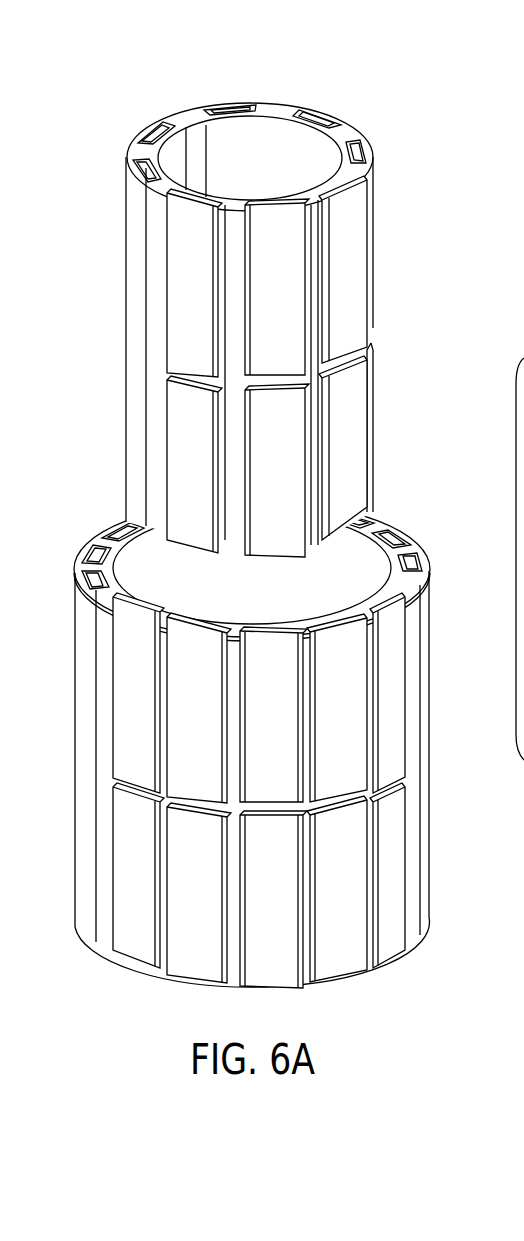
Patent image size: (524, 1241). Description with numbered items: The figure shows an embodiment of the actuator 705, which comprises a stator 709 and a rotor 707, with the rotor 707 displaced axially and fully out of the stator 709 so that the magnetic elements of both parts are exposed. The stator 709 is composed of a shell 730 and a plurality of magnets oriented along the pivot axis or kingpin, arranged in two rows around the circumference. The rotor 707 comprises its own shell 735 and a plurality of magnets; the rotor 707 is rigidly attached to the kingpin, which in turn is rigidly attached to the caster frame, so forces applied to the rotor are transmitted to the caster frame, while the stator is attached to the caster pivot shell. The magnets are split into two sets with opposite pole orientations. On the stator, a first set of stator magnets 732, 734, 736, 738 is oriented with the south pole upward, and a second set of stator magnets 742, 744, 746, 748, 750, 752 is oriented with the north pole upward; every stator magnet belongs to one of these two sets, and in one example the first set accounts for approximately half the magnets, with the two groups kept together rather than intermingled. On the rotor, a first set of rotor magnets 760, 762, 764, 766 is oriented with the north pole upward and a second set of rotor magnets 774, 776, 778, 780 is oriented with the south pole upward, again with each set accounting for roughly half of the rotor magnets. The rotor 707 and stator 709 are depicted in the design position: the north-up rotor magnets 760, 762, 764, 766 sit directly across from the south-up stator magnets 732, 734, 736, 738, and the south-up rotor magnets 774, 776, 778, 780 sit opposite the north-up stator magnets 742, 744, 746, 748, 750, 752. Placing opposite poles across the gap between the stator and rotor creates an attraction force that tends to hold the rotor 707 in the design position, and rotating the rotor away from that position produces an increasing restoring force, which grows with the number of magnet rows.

The actuator 705 is at (81, 484).
The rotor 707 is at (376, 77).
The stator 709 is at (449, 983).
The shell 730 is at (82, 615).
The shell 735 is at (133, 203).
The rotor magnet 760 is at (363, 157).
The rotor magnet 762 is at (373, 357).
The rotor magnet 764 is at (350, 255).
The rotor magnet 766 is at (355, 440).
The rotor magnet 774 is at (282, 290).
The rotor magnet 776 is at (288, 472).
The rotor magnet 778 is at (182, 265).
The rotor magnet 780 is at (185, 447).
The stator magnet 732 is at (397, 667).
The stator magnet 734 is at (397, 843).
The stator magnet 736 is at (348, 700).
The stator magnet 738 is at (345, 878).
The stator magnet 742 is at (278, 722).
The stator magnet 744 is at (283, 900).
The stator magnet 746 is at (190, 690).
The stator magnet 748 is at (190, 873).
The stator magnet 750 is at (120, 722).
The stator magnet 752 is at (127, 888).